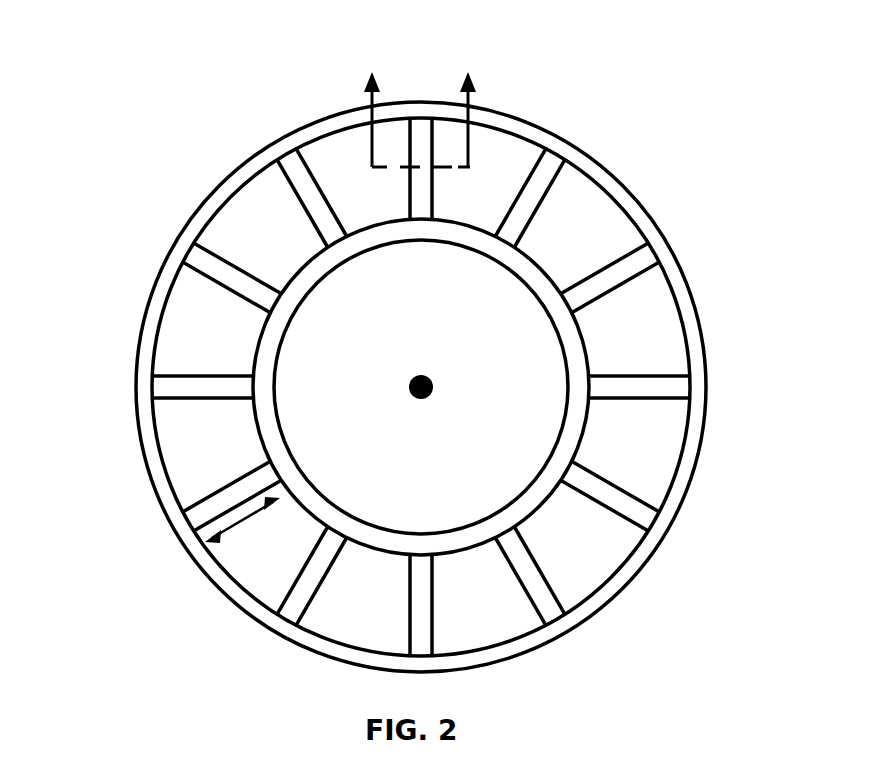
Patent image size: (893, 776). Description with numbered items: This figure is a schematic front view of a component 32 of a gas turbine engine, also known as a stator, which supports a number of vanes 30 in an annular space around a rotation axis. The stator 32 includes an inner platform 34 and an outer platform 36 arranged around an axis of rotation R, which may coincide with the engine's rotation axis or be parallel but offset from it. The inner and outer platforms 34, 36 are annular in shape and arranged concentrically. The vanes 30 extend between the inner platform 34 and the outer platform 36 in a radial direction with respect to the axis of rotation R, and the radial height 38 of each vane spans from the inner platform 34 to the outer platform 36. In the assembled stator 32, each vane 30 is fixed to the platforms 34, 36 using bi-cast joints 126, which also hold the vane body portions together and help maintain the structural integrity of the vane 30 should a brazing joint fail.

The vane 30 is at (415, 192).
The component 32 is at (156, 136).
The inner platform 34 is at (273, 347).
The outer platform 36 is at (147, 425).
The radial height 38 is at (245, 520).
The bi-cast joint 126 is at (593, 383).
The axis of rotation R is at (430, 378).